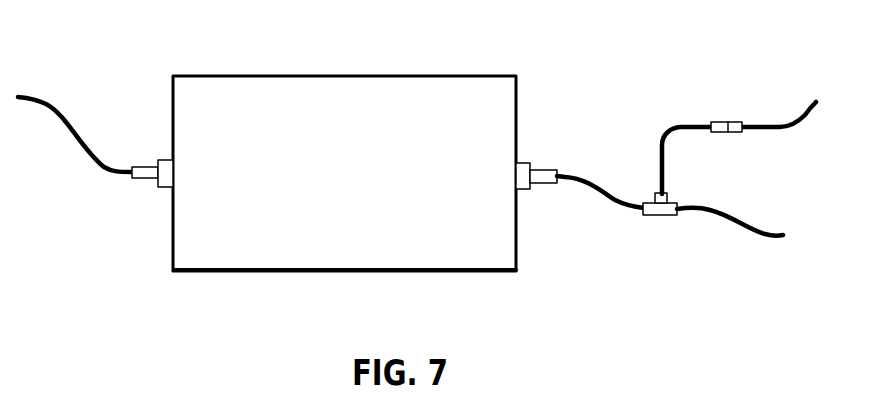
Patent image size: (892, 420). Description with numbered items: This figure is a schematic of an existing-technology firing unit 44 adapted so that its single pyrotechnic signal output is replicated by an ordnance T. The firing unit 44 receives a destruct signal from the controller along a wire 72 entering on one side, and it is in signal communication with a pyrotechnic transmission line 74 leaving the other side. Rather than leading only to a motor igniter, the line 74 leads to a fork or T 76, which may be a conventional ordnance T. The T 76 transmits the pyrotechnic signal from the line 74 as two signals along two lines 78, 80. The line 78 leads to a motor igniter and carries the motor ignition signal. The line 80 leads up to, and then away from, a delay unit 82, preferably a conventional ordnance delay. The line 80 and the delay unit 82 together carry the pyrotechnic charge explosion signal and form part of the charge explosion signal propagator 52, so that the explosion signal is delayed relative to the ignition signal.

The firing unit 44 is at (455, 271).
The wire 72 is at (45, 100).
The pyrotechnic transmission line 74 is at (563, 172).
The T 76 is at (675, 216).
The line 78 is at (777, 238).
The line 80 is at (670, 141).
The delay unit 82 is at (745, 133).
The charge explosion signal propagator 52 is at (598, 188).